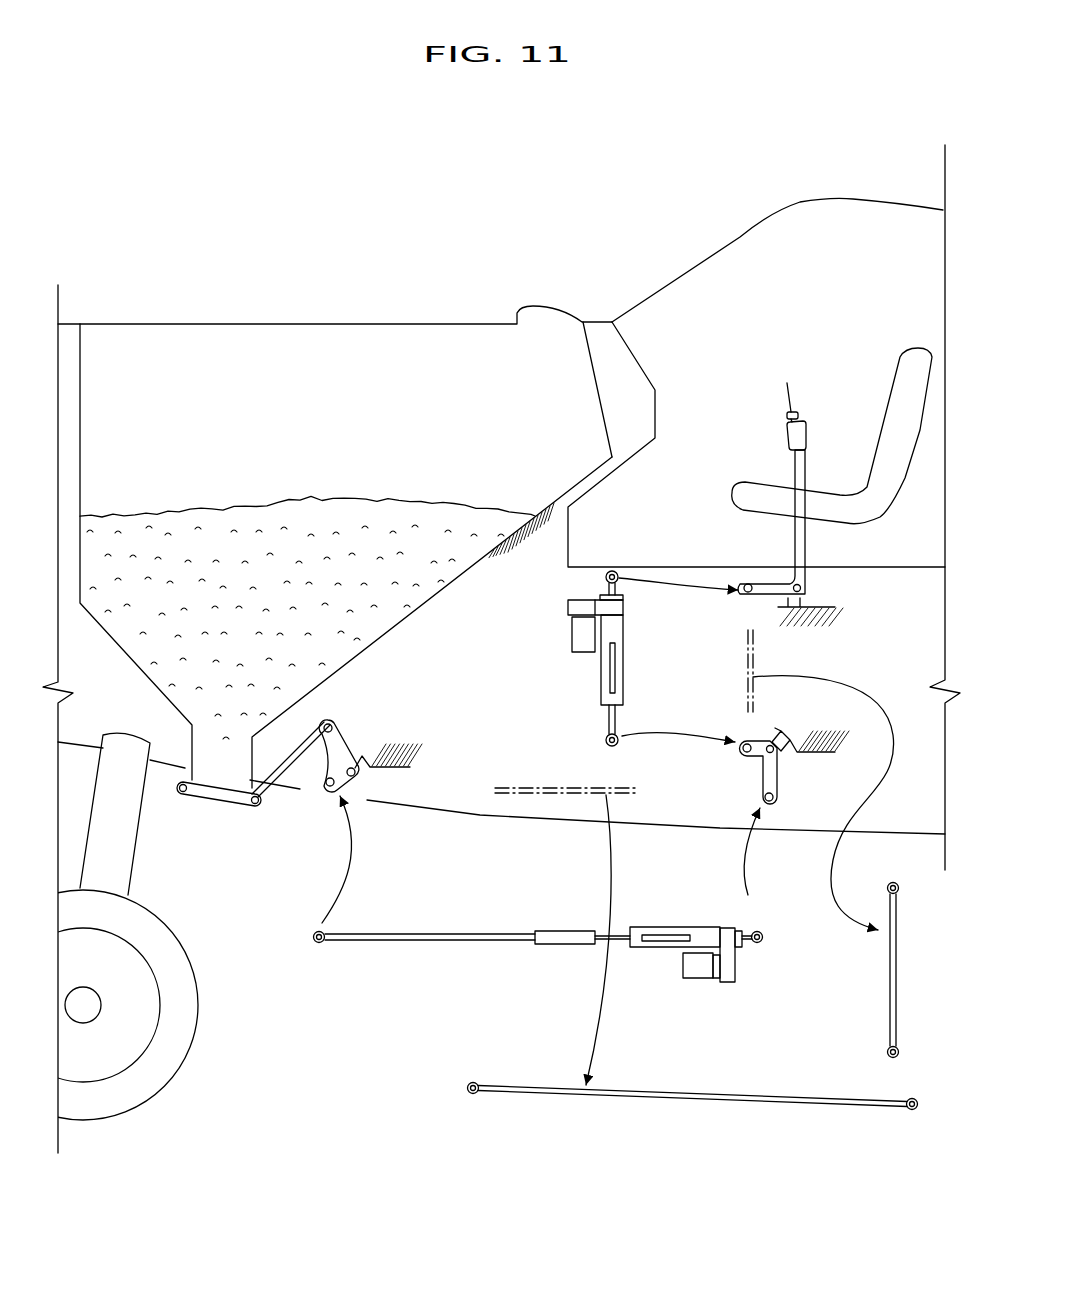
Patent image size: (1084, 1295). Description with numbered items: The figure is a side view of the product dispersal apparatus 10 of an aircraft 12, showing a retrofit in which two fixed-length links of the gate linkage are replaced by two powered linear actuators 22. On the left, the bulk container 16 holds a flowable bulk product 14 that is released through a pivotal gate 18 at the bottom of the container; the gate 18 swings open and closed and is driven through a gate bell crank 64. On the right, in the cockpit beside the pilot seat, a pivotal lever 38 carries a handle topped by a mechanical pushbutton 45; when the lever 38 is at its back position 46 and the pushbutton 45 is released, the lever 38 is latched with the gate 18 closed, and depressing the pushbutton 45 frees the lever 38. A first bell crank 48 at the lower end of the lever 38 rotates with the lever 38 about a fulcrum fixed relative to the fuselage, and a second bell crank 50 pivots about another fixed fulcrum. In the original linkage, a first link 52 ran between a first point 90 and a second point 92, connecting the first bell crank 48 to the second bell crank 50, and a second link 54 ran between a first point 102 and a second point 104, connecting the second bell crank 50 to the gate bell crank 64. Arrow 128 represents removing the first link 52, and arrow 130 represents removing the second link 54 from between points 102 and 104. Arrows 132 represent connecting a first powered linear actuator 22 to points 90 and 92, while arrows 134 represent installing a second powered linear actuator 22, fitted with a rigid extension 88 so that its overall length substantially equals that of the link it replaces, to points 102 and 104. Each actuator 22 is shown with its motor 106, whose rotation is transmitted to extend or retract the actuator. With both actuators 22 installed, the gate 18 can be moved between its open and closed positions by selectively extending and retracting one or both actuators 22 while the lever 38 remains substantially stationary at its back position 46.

The product dispersal apparatus 10 is at (218, 175).
The aircraft 12 is at (738, 237).
The flowable bulk product 14 is at (250, 505).
The bulk container 16 is at (400, 640).
The pivotal gate 18 is at (210, 800).
The powered linear actuator 22 is at (624, 628).
The pivotal lever 38 is at (805, 477).
The mechanical pushbutton 45 is at (800, 415).
The back position 46 is at (780, 396).
The first bell crank 48 is at (765, 600).
The second bell crank 50 is at (778, 784).
The first link 52 is at (900, 960).
The second link 54 is at (716, 1100).
The gate bell crank 64 is at (347, 725).
The rigid extension 88 is at (568, 931).
The first point 90 is at (748, 582).
The second point 92 is at (747, 755).
The first point 102 is at (780, 802).
The second point 104 is at (330, 788).
The motor 106 is at (572, 635).
The arrow 128 is at (885, 705).
The arrow 130 is at (605, 1010).
The arrows 132 is at (668, 583).
The arrows 134 is at (350, 880).